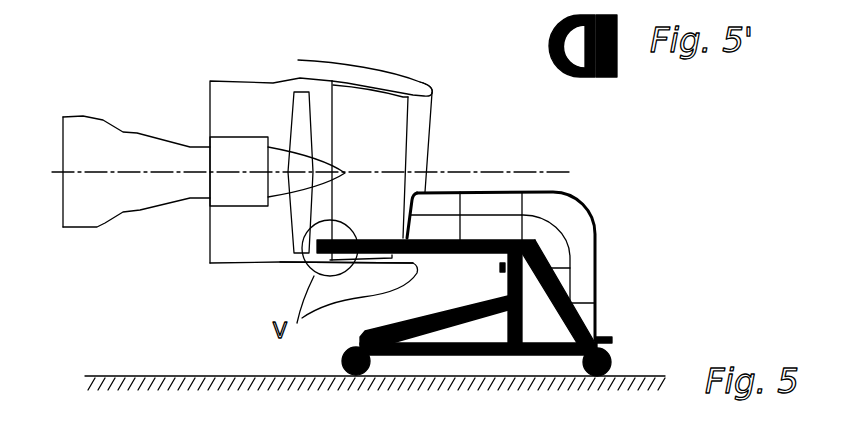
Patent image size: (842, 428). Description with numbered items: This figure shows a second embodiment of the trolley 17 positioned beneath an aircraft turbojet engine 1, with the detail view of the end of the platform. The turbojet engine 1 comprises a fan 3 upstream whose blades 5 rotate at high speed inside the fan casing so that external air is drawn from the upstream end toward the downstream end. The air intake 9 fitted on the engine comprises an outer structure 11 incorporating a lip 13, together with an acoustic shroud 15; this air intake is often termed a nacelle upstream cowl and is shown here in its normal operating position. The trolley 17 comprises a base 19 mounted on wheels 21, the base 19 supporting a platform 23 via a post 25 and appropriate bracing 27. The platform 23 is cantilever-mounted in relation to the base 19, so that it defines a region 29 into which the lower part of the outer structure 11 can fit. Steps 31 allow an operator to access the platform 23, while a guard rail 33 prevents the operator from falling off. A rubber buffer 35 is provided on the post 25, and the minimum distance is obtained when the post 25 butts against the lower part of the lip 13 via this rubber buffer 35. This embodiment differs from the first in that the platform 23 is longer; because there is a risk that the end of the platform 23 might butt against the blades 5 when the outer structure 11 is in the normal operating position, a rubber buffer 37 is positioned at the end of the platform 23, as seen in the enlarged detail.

In FIG. 5, the aircraft turbojet engine 1 is at (138, 90).
In FIG. 5, the fan 3 is at (238, 231).
In FIG. 5, the blades 5 is at (298, 113).
In FIG. 5, the air intake 9 is at (357, 56).
In FIG. 5, the outer structure 11 is at (395, 66).
In FIG. 5, the lip 13 is at (433, 88).
In FIG. 5, the acoustic shroud 15 is at (342, 88).
In FIG. 5, the trolley 17 is at (660, 248).
In FIG. 5, the base 19 is at (457, 350).
In FIG. 5, the wheels 21 is at (352, 368).
In FIG. 5, the platform 23 is at (368, 247).
In FIG. 5', the platform 23 is at (605, 68).
In FIG. 5, the post 25 is at (525, 322).
In FIG. 5, the bracing 27 is at (440, 315).
In FIG. 5, the region 29 is at (442, 280).
In FIG. 5, the steps 31 is at (590, 294).
In FIG. 5, the guard rail 33 is at (590, 210).
In FIG. 5, the rubber buffer 35 is at (502, 268).
In FIG. 5', the rubber buffer 37 is at (568, 76).